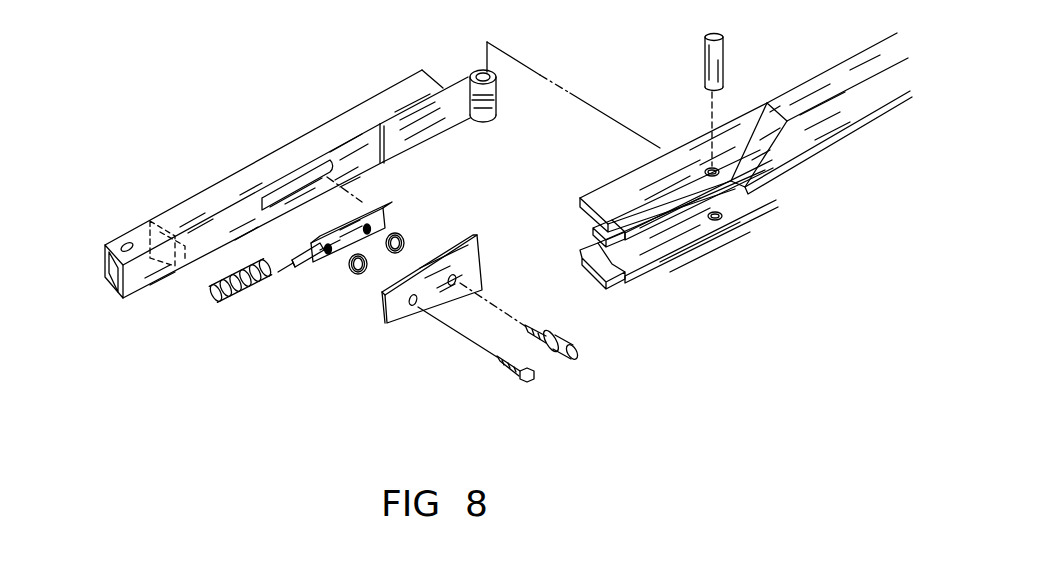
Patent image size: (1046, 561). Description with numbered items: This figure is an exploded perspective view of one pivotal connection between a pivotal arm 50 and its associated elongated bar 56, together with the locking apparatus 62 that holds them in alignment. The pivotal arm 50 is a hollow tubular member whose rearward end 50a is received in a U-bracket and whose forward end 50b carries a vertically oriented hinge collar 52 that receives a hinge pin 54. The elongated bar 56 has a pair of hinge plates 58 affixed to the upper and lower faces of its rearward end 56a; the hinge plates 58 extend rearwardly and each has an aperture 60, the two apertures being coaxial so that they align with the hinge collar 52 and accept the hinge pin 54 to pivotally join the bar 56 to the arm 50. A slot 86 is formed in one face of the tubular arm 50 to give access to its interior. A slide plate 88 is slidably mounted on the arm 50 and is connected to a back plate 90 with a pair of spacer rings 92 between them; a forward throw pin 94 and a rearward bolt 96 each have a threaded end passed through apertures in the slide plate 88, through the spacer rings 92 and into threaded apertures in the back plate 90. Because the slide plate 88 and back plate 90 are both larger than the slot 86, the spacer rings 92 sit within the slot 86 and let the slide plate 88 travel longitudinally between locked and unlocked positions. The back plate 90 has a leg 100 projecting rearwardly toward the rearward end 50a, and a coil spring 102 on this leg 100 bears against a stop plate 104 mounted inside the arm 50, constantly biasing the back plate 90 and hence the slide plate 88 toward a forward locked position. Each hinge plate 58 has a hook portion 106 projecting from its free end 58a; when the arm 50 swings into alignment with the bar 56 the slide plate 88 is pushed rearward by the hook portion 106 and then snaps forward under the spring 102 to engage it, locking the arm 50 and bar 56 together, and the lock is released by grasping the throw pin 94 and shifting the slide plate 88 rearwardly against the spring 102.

The pivotal arm 50 is at (223, 185).
The rearward end 50a is at (130, 236).
The forward end 50b is at (402, 82).
The hinge collar 52 is at (490, 102).
The hinge pin 54 is at (715, 70).
The elongated bar 56 is at (832, 83).
The rearward end 56a is at (817, 135).
The hinge plates 58 is at (662, 240).
The free end 58a is at (608, 200).
The aperture 60 is at (728, 218).
The locking apparatus 62 is at (232, 112).
The slot 86 is at (273, 198).
The slide plate 88 is at (470, 270).
The back plate 90 is at (380, 218).
The spacer rings 92 is at (403, 236).
The throw pin 94 is at (563, 340).
The bolt 96 is at (523, 383).
The leg 100 is at (305, 270).
The coil spring 102 is at (252, 298).
The stop plate 104 is at (150, 221).
The hook portion 106 is at (617, 271).